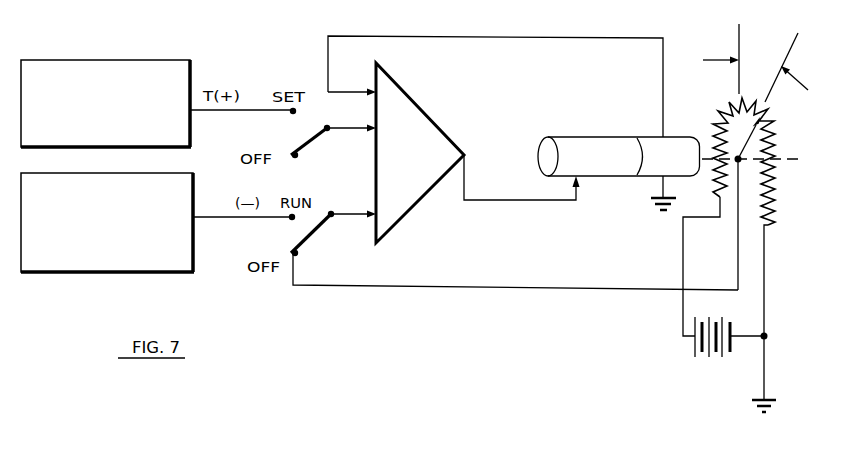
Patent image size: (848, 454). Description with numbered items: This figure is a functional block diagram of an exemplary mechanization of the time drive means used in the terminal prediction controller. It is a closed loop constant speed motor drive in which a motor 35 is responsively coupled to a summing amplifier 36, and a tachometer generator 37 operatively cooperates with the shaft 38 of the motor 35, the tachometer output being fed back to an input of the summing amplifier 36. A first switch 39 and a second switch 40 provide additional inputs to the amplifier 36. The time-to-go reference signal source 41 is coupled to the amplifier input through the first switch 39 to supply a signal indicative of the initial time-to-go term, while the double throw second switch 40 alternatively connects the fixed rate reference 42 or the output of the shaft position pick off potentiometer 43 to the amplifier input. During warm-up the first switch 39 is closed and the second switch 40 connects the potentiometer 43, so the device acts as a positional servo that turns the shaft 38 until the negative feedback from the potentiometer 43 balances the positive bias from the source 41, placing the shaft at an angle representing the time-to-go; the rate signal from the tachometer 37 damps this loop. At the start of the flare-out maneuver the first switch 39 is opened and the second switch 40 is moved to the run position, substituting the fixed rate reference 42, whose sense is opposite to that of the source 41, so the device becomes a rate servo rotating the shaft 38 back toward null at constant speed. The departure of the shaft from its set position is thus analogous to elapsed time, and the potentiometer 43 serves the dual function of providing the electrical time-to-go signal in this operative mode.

The motor 35 is at (603, 145).
The summing amplifier 36 is at (413, 135).
The tachometer generator 37 is at (677, 148).
The shaft 38 is at (797, 163).
The first switch 39 is at (318, 147).
The second switch 40 is at (324, 241).
The time-to-go reference signal source 41 is at (140, 72).
The fixed rate reference 42 is at (158, 248).
The shaft position pick off potentiometer 43 is at (760, 190).